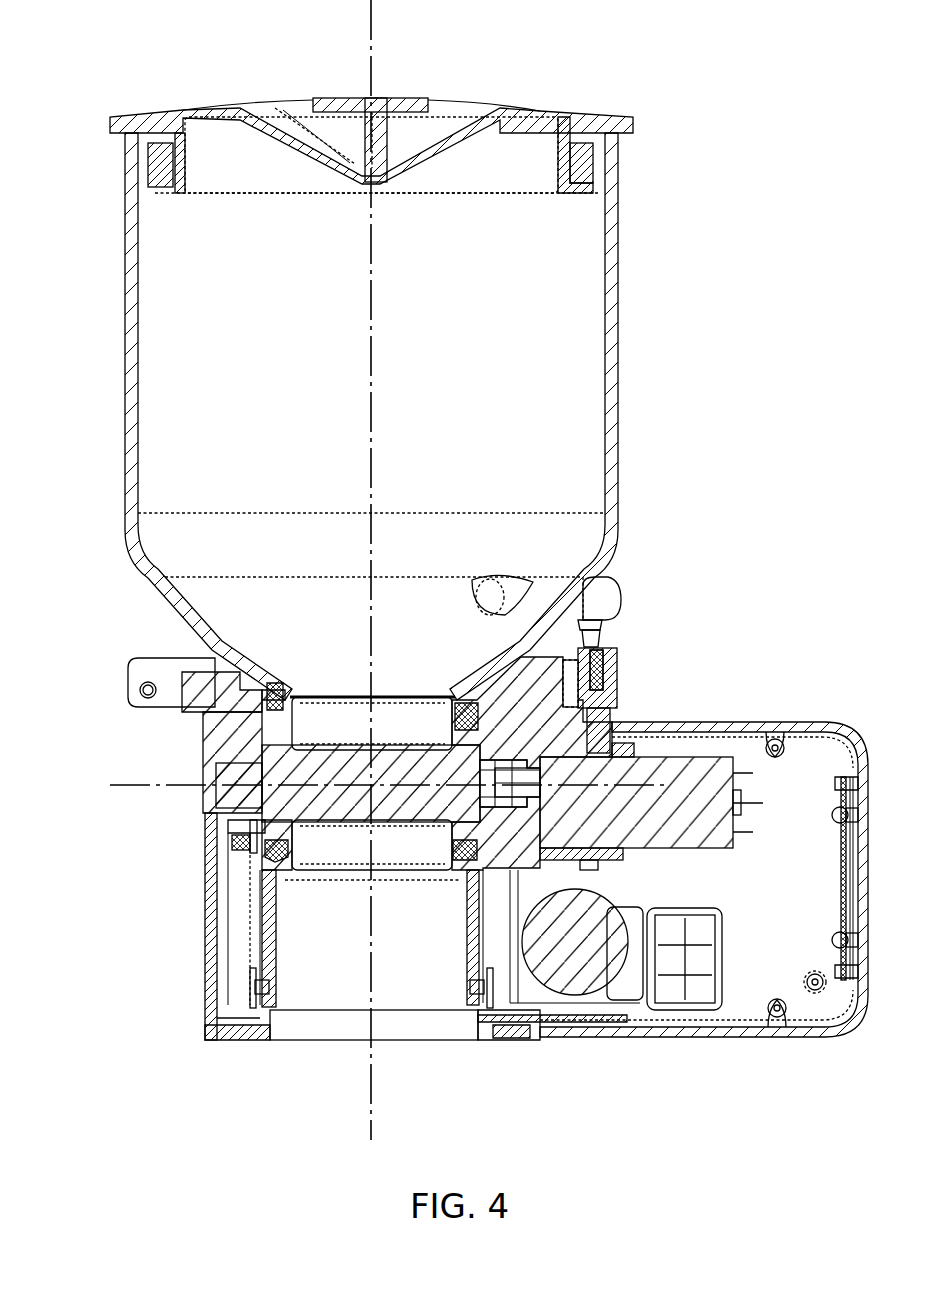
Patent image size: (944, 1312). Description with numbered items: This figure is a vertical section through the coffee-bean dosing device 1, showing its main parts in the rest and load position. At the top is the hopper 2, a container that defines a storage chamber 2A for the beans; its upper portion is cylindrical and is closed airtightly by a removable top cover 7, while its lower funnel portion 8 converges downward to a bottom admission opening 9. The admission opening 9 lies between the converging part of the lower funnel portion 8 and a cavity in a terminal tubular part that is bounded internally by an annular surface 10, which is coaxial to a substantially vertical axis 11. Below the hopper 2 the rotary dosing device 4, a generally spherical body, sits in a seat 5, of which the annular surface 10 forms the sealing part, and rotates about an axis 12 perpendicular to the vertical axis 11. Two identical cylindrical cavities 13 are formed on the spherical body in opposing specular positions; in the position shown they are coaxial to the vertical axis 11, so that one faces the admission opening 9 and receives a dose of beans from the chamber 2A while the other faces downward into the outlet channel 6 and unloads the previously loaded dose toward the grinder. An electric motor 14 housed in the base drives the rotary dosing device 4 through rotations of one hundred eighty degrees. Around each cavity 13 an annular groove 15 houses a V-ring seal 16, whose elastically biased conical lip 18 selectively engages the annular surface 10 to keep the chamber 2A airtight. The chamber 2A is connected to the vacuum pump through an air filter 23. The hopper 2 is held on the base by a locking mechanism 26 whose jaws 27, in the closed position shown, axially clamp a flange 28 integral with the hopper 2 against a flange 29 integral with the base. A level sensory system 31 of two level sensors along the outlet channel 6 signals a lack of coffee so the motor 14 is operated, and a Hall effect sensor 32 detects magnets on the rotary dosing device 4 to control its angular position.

The device 1 is at (770, 160).
The hopper 2 is at (623, 408).
The storage chamber 2A is at (540, 355).
The rotary dosing device 4 is at (250, 850).
The seat 5 is at (470, 826).
The outlet channel 6 is at (282, 965).
The top cover 7 is at (598, 112).
The lower funnel portion 8 is at (190, 606).
The admission opening 9 is at (289, 692).
The annular surface 10 is at (440, 697).
The vertical axis 11 is at (371, 35).
The axis 12 is at (135, 797).
The cylindrical cavities 13 is at (312, 862).
The electric motor 14 is at (695, 775).
The annular grooves 15 is at (305, 697).
The seals 16 is at (276, 698).
The conical lip 18 is at (480, 700).
The air filter 23 is at (614, 598).
The locking mechanism 26 is at (126, 690).
The jaws 27 is at (138, 710).
The flange 28 is at (183, 680).
The flange 29 is at (200, 712).
The level sensory system 31 is at (258, 987).
The Hall effect sensor 32 is at (234, 842).